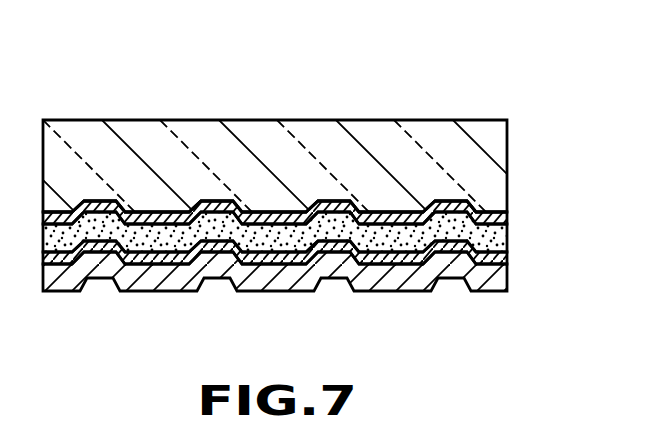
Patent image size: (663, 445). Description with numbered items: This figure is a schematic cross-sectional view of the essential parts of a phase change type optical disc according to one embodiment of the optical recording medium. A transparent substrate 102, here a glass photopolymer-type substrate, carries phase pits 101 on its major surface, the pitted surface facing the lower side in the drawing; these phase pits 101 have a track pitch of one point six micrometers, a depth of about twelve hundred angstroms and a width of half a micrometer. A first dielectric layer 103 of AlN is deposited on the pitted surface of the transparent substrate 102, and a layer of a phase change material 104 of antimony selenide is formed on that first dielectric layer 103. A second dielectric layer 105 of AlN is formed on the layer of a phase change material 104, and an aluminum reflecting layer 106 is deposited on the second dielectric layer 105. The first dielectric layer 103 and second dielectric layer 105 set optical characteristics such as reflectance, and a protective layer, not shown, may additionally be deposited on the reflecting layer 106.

The phase pits 101 is at (345, 198).
The transparent substrate 102 is at (488, 180).
The first dielectric layer 103 is at (506, 215).
The layer of a phase change material 104 is at (497, 237).
The second dielectric layer 105 is at (507, 259).
The reflecting layer 106 is at (505, 283).